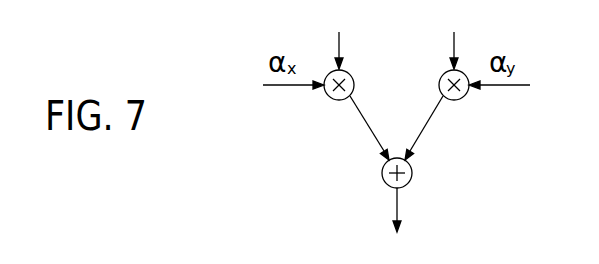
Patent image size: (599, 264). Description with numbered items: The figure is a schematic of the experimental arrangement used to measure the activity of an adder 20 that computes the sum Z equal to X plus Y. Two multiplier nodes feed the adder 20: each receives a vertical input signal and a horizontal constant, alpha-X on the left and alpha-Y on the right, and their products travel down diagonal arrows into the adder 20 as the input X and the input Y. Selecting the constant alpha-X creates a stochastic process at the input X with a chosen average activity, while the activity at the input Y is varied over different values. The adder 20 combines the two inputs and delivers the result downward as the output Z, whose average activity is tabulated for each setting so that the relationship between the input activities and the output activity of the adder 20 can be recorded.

The adder 20 is at (412, 177).
The input X is at (363, 130).
The input Y is at (427, 130).
The output Z is at (412, 210).